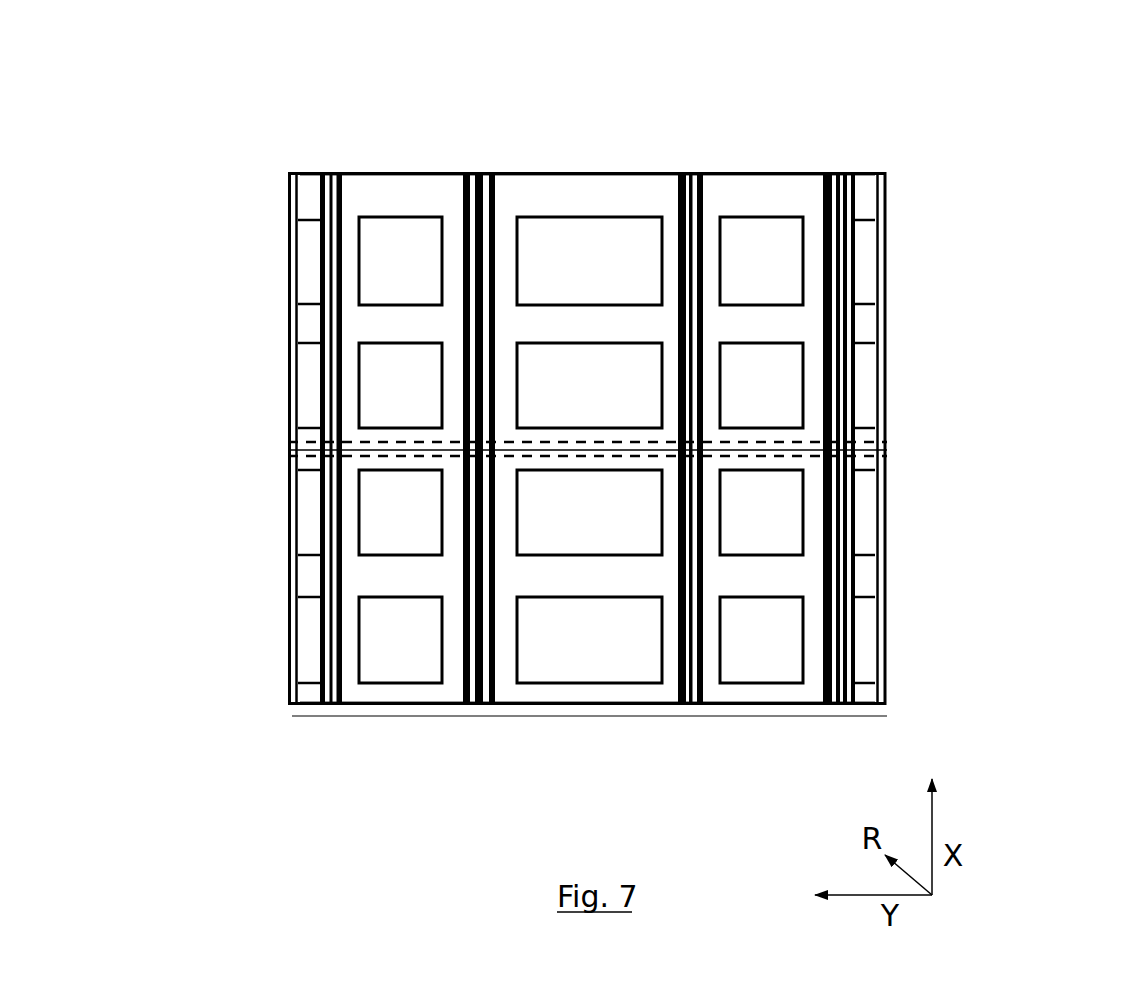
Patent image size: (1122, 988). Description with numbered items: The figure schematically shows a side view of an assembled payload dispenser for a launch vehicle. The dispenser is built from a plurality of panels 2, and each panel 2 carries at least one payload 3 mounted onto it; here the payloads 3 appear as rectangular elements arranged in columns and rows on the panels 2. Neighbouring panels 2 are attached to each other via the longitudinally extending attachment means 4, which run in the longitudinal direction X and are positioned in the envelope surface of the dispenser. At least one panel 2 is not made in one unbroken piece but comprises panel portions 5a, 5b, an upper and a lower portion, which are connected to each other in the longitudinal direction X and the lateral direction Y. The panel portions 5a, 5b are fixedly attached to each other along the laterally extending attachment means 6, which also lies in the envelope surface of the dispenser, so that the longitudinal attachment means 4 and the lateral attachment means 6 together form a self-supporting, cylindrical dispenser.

The panel 2 is at (389, 212).
The payload 3 is at (770, 656).
The attachment means 4 is at (462, 170).
The panel portion 5a is at (912, 268).
The panel portion 5b is at (903, 622).
The attachment means 6 is at (360, 452).